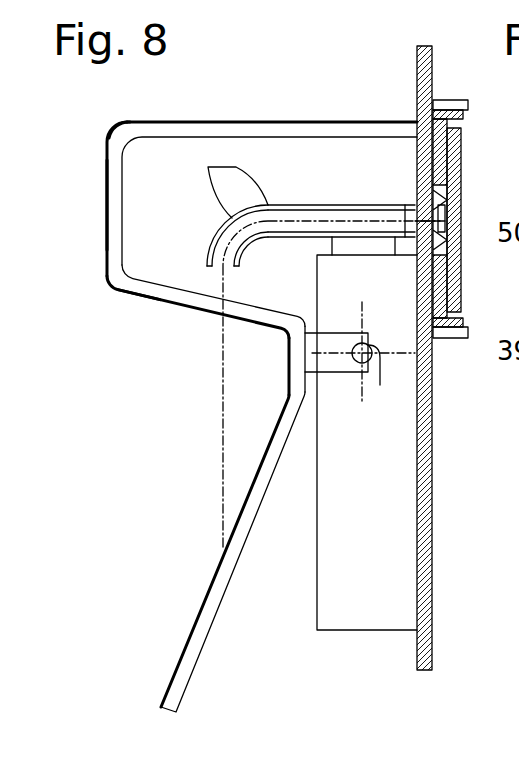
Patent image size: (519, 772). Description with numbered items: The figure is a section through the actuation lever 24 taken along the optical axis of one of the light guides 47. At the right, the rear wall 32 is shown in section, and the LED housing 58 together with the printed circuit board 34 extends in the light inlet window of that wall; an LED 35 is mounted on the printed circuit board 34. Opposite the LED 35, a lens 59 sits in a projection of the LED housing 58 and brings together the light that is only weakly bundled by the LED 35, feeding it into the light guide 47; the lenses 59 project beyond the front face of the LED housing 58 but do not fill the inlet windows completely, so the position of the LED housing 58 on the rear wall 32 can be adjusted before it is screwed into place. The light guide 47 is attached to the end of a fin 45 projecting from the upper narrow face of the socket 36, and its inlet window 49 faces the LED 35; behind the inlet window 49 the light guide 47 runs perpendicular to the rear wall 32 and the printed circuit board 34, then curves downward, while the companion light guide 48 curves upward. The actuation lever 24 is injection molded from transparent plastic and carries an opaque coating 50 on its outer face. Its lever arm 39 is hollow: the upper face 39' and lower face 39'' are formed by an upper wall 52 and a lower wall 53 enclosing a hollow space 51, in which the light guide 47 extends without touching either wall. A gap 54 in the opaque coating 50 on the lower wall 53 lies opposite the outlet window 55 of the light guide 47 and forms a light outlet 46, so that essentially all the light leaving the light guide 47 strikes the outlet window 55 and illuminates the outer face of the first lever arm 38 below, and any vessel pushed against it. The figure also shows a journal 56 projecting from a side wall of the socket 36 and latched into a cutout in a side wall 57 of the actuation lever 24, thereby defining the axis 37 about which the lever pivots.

The actuation lever 24 is at (146, 371).
The rear wall 32 is at (447, 398).
The printed circuit board 34 is at (452, 163).
The LED 35 is at (433, 216).
The socket 36 is at (340, 545).
The axis 37 is at (360, 350).
The first lever arm 38 is at (218, 595).
The lever arm 39 is at (59, 256).
The upper face 39' is at (143, 112).
The lower face 39'' is at (111, 331).
The fin 45 is at (363, 245).
The light outlet 46 is at (309, 384).
The light guide 47 is at (226, 228).
The light guide 48 is at (237, 197).
The inlet window 49 is at (413, 210).
The opaque coating 50 is at (106, 219).
The hollow space 51 is at (305, 187).
The upper wall 52 is at (226, 124).
The lower wall 53 is at (163, 289).
The gap 54 is at (208, 313).
The outlet window 55 is at (210, 268).
The journal 56 is at (380, 385).
The side wall 57 is at (340, 365).
The LED housing 58 is at (457, 115).
The lens 59 is at (433, 216).